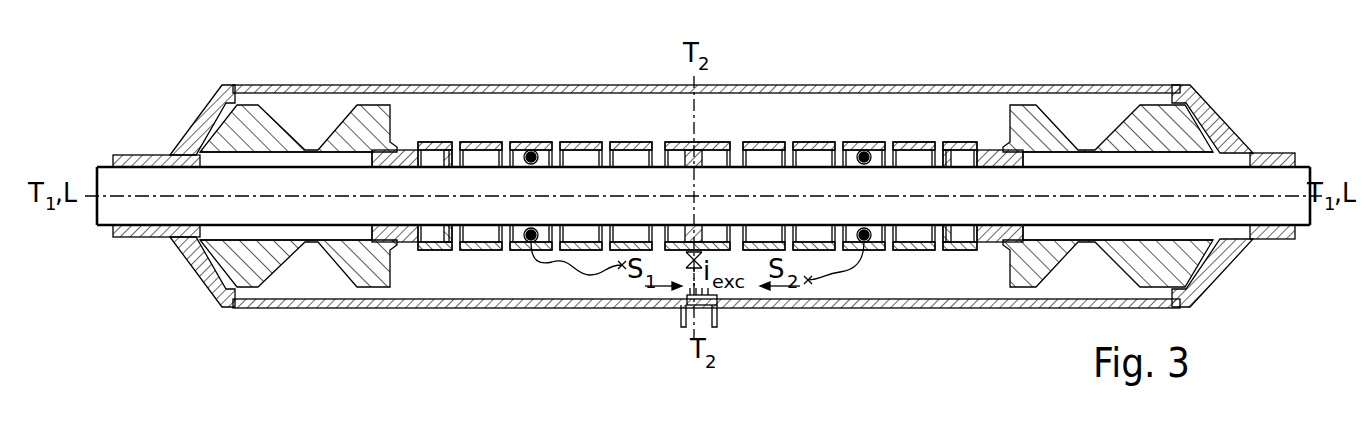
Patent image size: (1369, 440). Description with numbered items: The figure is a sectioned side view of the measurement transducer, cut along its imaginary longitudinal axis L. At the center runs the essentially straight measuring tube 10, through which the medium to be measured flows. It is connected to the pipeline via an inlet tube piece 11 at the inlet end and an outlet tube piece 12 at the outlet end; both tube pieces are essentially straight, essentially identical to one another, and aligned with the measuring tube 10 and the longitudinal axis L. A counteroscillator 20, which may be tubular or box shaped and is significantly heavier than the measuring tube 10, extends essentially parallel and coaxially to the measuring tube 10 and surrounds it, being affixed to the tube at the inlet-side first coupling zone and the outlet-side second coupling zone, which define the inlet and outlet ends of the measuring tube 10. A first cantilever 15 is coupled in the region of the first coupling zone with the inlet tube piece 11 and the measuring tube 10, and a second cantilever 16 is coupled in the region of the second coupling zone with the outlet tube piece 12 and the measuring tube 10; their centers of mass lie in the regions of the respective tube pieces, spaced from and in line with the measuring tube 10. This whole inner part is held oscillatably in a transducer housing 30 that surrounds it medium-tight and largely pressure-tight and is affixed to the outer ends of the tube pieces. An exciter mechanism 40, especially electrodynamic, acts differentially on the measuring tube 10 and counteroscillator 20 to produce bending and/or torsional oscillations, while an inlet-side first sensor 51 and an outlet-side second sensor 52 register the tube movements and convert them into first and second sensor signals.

The measuring tube 10 is at (428, 180).
The inlet tube piece 11 is at (167, 173).
The outlet tube piece 12 is at (1168, 173).
The first cantilever 15 is at (362, 107).
The second cantilever 16 is at (1147, 100).
The counteroscillator 20 is at (805, 140).
The transducer housing 30 is at (755, 88).
The exciter mechanism 40 is at (687, 147).
The first sensor 51 is at (527, 153).
The second sensor 52 is at (873, 153).